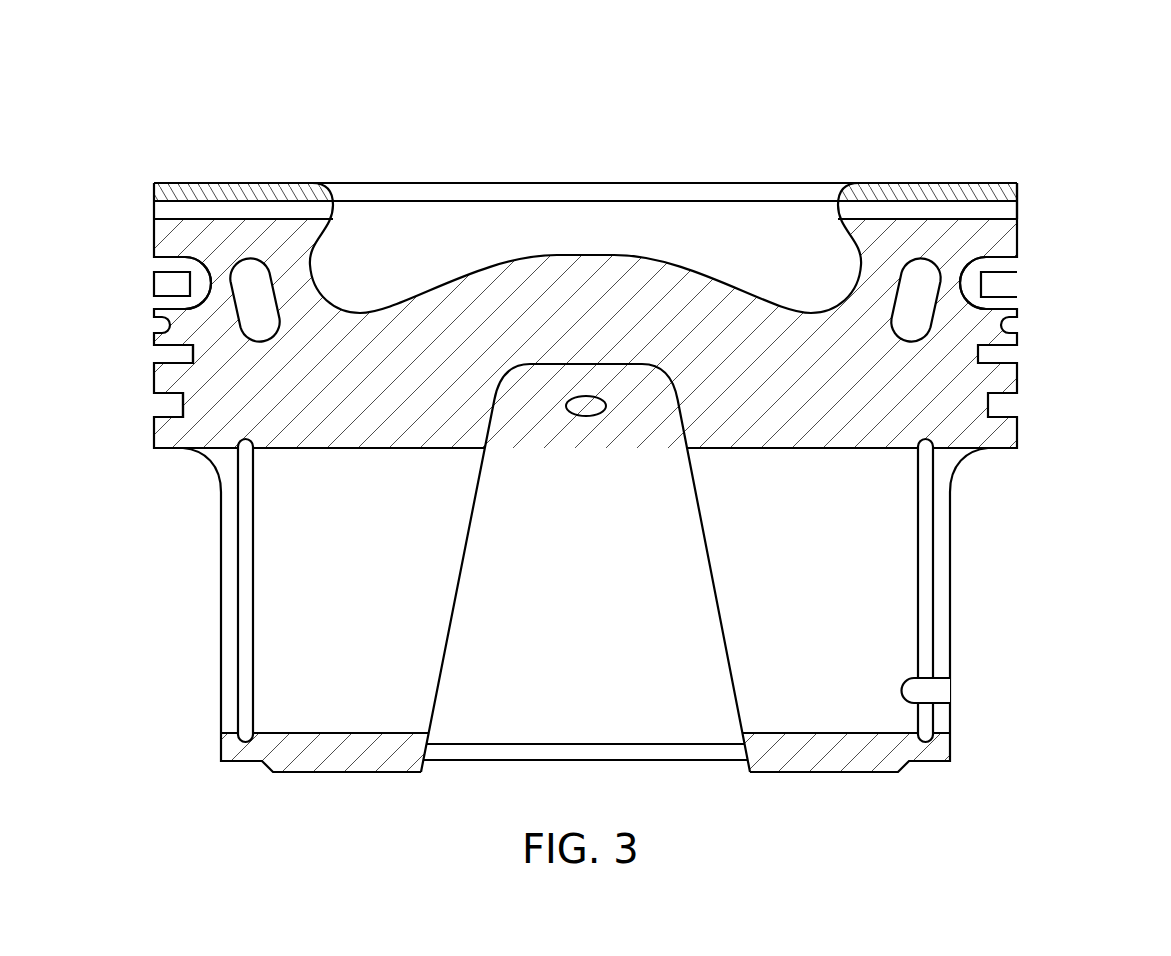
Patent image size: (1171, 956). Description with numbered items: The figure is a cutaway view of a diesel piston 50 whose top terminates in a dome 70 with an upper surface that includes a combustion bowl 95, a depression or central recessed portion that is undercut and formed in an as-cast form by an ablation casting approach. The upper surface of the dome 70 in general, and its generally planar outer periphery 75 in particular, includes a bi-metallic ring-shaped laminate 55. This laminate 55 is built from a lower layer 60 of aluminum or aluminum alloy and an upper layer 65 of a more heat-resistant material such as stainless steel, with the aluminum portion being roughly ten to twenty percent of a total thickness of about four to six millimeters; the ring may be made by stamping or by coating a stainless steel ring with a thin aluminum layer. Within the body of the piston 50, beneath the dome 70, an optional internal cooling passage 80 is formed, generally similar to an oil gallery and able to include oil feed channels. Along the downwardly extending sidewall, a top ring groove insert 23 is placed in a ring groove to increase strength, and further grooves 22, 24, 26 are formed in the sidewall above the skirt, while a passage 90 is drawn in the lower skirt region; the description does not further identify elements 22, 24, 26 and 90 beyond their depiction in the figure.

The diesel piston 50 is at (178, 128).
The bi-metallic ring-shaped laminate 55 is at (1040, 200).
The lower layer 60 is at (1018, 210).
The upper layer 65 is at (1018, 190).
The dome 70 is at (1008, 243).
The generally planar outer periphery 75 is at (1023, 172).
The internal cooling passage 80 is at (910, 283).
The oil passage 90 is at (938, 690).
The combustion bowl 95 is at (421, 220).
The ring carrier 22 is at (157, 287).
The top ring groove insert 23 is at (157, 260).
The second ring groove 24 is at (157, 354).
The oil ring groove 26 is at (160, 403).